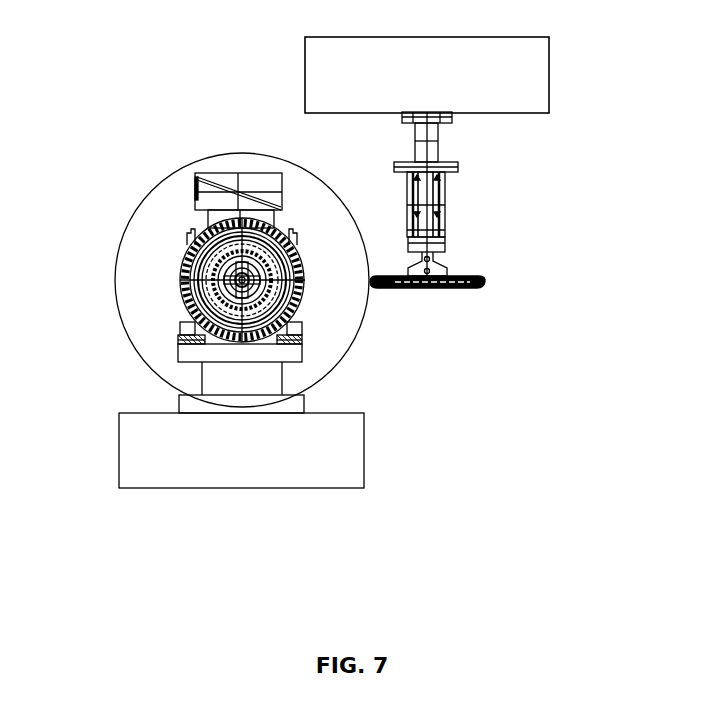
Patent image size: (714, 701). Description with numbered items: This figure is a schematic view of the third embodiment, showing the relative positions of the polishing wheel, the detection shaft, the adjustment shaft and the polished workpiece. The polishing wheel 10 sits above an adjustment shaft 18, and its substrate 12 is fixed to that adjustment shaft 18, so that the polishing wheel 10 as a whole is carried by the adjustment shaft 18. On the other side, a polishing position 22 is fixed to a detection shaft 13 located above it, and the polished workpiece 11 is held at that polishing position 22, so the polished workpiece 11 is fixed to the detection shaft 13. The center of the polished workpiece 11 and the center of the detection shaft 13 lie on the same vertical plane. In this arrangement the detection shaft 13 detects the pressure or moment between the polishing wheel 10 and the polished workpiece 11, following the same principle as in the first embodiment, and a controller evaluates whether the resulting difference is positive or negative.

The detection shaft 13 is at (523, 77).
The polishing position 22 is at (528, 194).
The polished workpiece 11 is at (487, 277).
The polishing wheel 10 is at (125, 267).
The substrate 12 is at (292, 403).
The adjustment shaft 18 is at (163, 468).